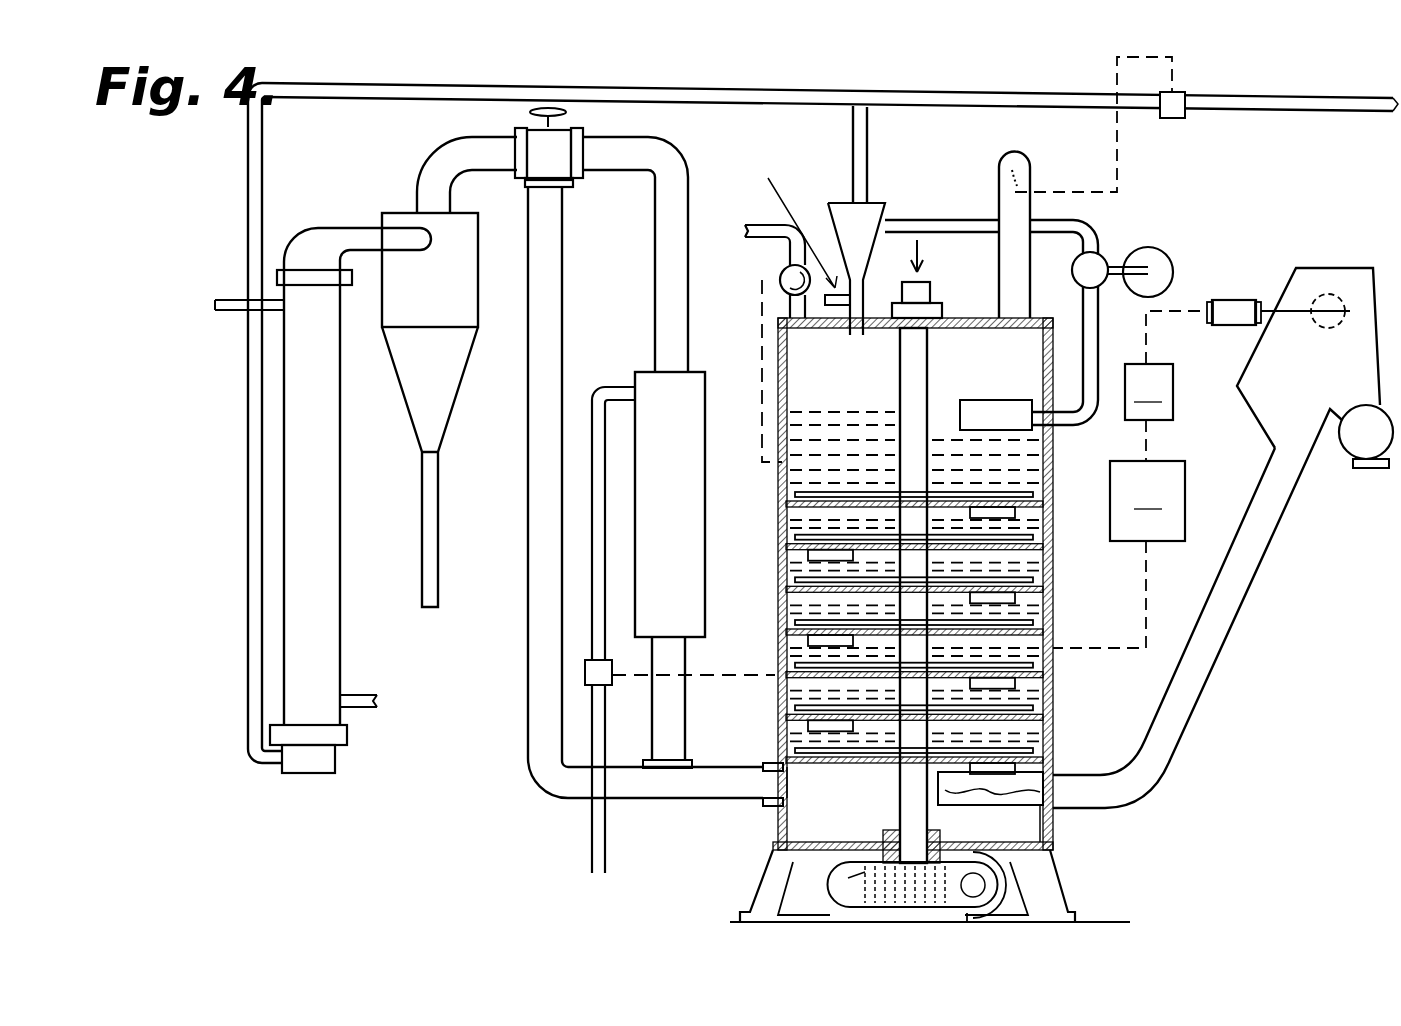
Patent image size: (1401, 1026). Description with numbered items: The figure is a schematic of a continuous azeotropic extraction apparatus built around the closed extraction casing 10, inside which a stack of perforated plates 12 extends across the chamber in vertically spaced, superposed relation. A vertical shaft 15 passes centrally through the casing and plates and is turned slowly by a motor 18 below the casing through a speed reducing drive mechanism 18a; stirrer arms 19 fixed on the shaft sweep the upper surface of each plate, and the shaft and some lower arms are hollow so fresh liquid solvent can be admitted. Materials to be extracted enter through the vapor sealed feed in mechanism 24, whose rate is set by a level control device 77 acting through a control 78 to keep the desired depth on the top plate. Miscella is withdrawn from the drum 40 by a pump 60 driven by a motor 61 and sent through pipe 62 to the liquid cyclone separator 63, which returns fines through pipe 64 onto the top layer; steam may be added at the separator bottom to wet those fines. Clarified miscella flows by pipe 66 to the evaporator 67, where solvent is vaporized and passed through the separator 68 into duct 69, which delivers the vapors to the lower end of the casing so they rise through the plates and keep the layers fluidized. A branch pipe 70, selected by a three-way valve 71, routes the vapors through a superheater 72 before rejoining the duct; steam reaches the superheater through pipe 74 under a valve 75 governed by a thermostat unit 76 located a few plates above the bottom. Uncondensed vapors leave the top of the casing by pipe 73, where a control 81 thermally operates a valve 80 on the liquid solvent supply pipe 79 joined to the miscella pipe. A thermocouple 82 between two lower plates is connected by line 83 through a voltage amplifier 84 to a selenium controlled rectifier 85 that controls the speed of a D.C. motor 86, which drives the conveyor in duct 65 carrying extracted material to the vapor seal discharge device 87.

The extraction casing 10 is at (1045, 362).
The perforated plates 12 is at (792, 496).
The vertical shaft 15 is at (900, 362).
The motor 18 is at (985, 885).
The speed reducing drive mechanism 18a is at (845, 887).
The stirrer arms 19 is at (790, 537).
The vapor sealed feed in mechanism 24 is at (783, 270).
The drum 40 is at (995, 400).
The pump 60 is at (1100, 284).
The motor 61 is at (1151, 255).
The pipe 62 is at (946, 222).
The liquid cyclone separator 63 is at (845, 202).
The pipe 64 is at (852, 298).
The duct 65 is at (1085, 772).
The pipe 66 is at (860, 140).
The evaporator 67 is at (318, 497).
The separator 68 is at (445, 291).
The duct 69 is at (463, 148).
The branch pipe 70 is at (668, 315).
The 3-way valve 71 is at (570, 150).
The superheater 72 is at (682, 568).
The pipe 73 is at (1000, 275).
The pipe 74 is at (592, 832).
The valve 75 is at (612, 685).
The thermostat unit 76 is at (782, 690).
The level control device 77 is at (805, 440).
The control 78 is at (760, 346).
The liquid solvent supply pipe 79 is at (952, 102).
The valve 80 is at (1185, 118).
The control 81 is at (1007, 165).
The thermocouple 82 is at (950, 644).
The line 83 is at (1146, 586).
The voltage amplifier 84 is at (1147, 480).
The selenium controlled rectifier 85 is at (1166, 365).
The D.C. motor 86 is at (1232, 310).
The vapor seal discharge device 87 is at (1315, 368).